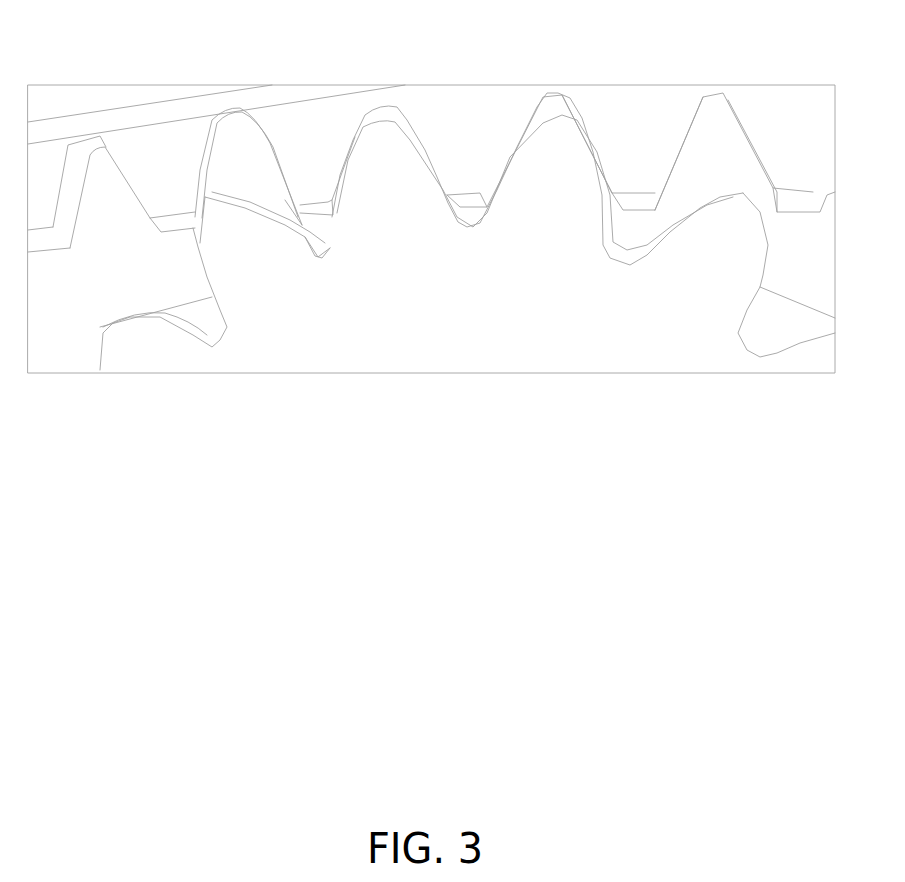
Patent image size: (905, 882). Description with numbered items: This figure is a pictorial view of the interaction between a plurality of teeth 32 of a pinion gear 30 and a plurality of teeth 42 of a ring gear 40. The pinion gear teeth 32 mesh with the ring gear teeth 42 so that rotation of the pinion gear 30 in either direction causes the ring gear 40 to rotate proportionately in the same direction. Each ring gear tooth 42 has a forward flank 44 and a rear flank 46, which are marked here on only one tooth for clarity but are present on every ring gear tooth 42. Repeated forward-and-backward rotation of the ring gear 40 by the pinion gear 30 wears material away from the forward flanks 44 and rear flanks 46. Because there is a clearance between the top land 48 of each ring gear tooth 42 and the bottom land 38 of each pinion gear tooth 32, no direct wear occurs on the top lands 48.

The pinion gear 30 is at (290, 340).
The pinion gear teeth 32 is at (272, 274).
The bottom land 38 is at (328, 248).
The ring gear 40 is at (127, 127).
The ring gear teeth 42 is at (177, 186).
The forward flank 44 is at (688, 138).
The rear flank 46 is at (592, 138).
The top land 48 is at (315, 218).